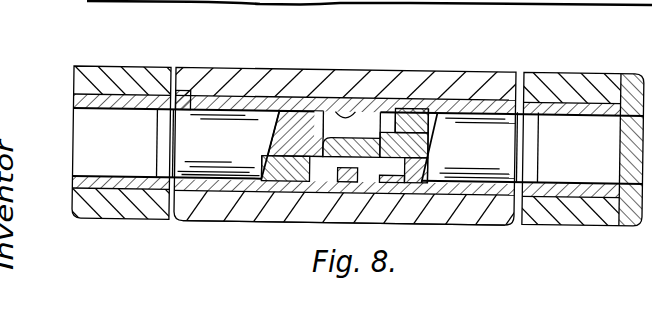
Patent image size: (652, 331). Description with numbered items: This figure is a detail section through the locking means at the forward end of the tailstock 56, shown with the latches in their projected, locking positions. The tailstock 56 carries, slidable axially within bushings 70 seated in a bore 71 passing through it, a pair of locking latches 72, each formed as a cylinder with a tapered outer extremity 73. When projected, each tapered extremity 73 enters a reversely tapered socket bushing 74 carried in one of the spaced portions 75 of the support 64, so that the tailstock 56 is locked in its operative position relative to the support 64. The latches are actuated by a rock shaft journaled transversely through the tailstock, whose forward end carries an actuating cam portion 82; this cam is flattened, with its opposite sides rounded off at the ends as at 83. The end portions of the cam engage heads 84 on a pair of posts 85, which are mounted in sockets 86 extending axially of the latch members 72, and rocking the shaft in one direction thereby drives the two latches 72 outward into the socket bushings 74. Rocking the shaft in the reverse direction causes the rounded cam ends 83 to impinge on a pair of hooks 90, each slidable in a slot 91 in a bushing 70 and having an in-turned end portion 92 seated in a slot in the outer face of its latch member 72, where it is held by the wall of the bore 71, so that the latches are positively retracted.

The tailstock 56 is at (489, 217).
The support 64 is at (260, 1).
The bushings 70 is at (256, 70).
The bore 71 is at (213, 70).
The locking latches 72 is at (183, 128).
The tapered outer extremity 73 is at (162, 155).
The socket bushing 74 is at (73, 105).
The spaced portions 75 is at (116, 65).
The actuating cam portion 82 is at (344, 114).
The rounded ends of cam portion 83 is at (330, 112).
The heads 84 is at (410, 118).
The posts 85 is at (261, 180).
The sockets 86 is at (283, 97).
The hooks 90 is at (374, 70).
The slot 91 is at (362, 132).
The in-turned end portion 92 is at (438, 96).